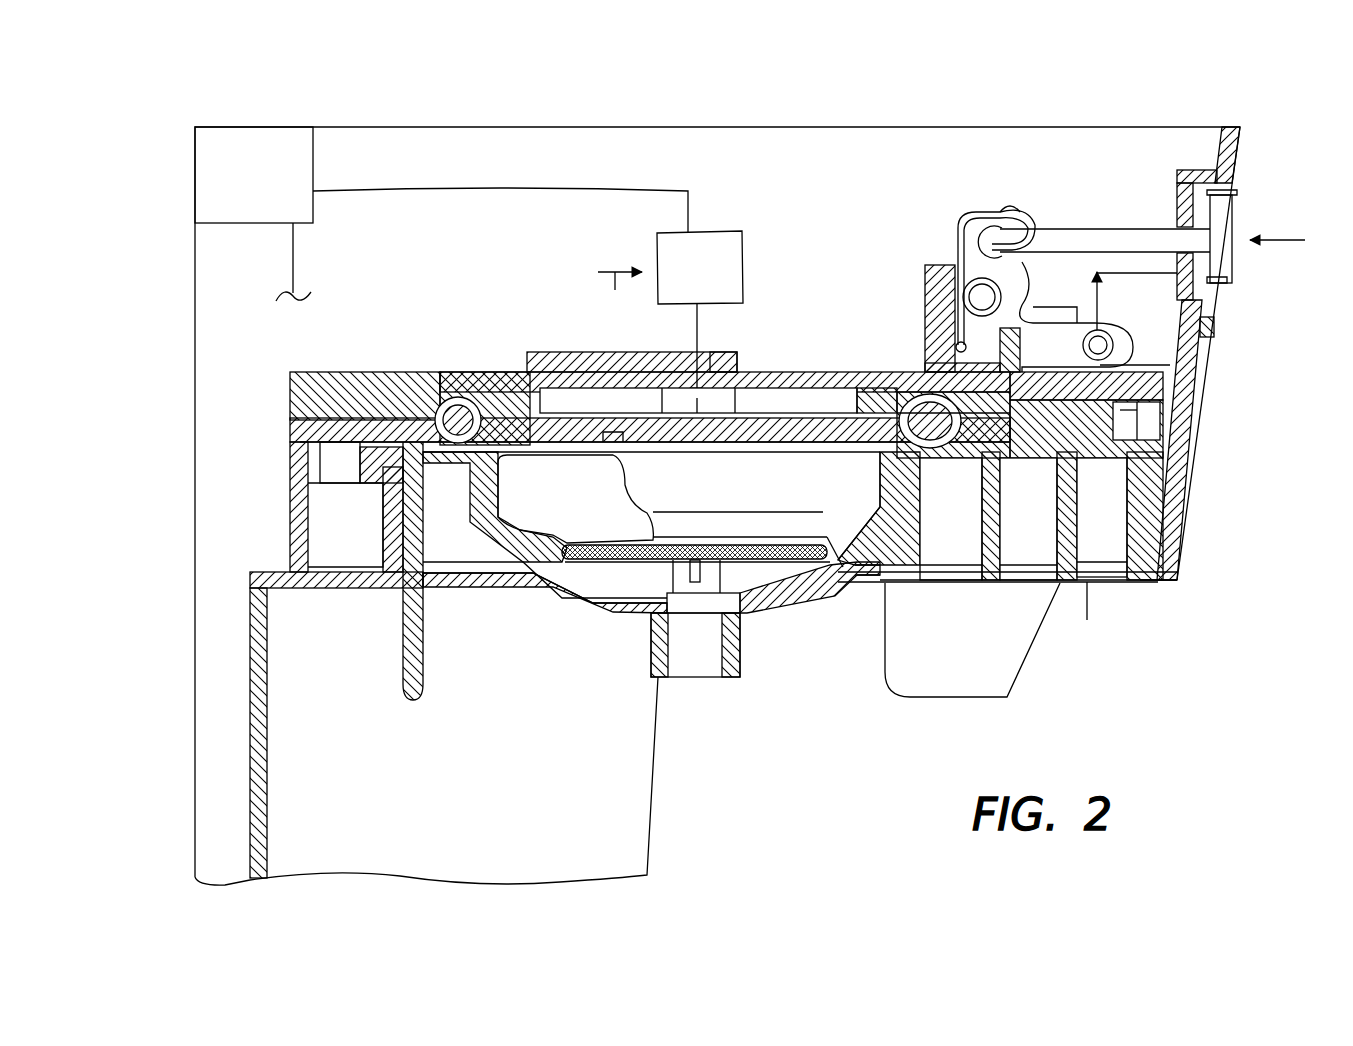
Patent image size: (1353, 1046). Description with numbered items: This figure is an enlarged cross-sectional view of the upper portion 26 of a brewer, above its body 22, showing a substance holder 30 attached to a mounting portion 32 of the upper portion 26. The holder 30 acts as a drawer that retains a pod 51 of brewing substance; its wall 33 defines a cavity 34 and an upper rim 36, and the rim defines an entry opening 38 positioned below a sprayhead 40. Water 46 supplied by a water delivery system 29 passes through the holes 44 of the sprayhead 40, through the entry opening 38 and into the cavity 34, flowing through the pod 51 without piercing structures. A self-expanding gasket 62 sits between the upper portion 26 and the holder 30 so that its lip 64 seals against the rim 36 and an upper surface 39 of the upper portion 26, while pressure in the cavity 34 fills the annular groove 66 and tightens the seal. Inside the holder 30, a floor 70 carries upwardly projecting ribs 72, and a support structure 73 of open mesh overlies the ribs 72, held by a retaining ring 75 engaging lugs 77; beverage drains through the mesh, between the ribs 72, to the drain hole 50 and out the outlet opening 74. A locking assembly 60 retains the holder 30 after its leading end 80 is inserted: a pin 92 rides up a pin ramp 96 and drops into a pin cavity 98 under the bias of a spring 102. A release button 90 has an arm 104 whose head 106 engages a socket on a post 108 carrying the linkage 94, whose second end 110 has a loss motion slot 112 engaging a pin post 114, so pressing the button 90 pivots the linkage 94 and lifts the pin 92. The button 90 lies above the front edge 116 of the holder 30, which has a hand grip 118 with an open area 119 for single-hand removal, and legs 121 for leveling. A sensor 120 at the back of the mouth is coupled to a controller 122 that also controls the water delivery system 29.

The upper portion 26 is at (1240, 110).
The controller 122 is at (293, 184).
The water delivery system 29 is at (720, 232).
The water 46 is at (727, 327).
The upper rim 36 is at (528, 452).
The lip 64 is at (474, 445).
The holes 44 is at (600, 452).
The annular groove 66 is at (947, 420).
The upper surface 39 is at (905, 420).
The pin cavity 98 is at (1133, 440).
The pin 92 is at (1123, 420).
The pin post 114 is at (1113, 348).
The sprayhead 40 is at (905, 565).
The wall 33 is at (945, 565).
The gasket 62 is at (983, 565).
The mounting portion 32 is at (1058, 582).
The pin ramp 96 is at (1092, 612).
The front edge 116 is at (1191, 480).
The substance holder 30 is at (1194, 535).
The locking assembly 60 is at (977, 166).
The spring 102 is at (975, 297).
The post 108 is at (1045, 230).
The linkage 94 is at (948, 238).
The head 106 is at (960, 218).
The arm 104 is at (1137, 233).
The loss motion slot 112 is at (1067, 333).
The second end 110 is at (1098, 345).
The release button 90 is at (1230, 264).
The sensor 120 is at (318, 452).
The leading end 80 is at (378, 505).
The legs 121 is at (398, 698).
The body 22 is at (662, 868).
The floor 70 is at (603, 608).
The pod 51 is at (553, 505).
The support structure 73 is at (776, 548).
The lugs 77 is at (840, 540).
The retaining ring 75 is at (830, 556).
The entry opening 38 is at (793, 567).
The ribs 72 is at (672, 612).
The outlet opening 74 is at (713, 684).
The drain hole 50 is at (724, 684).
The cavity 34 is at (873, 565).
The hand grip 118 is at (1144, 595).
The open area 119 is at (1115, 583).